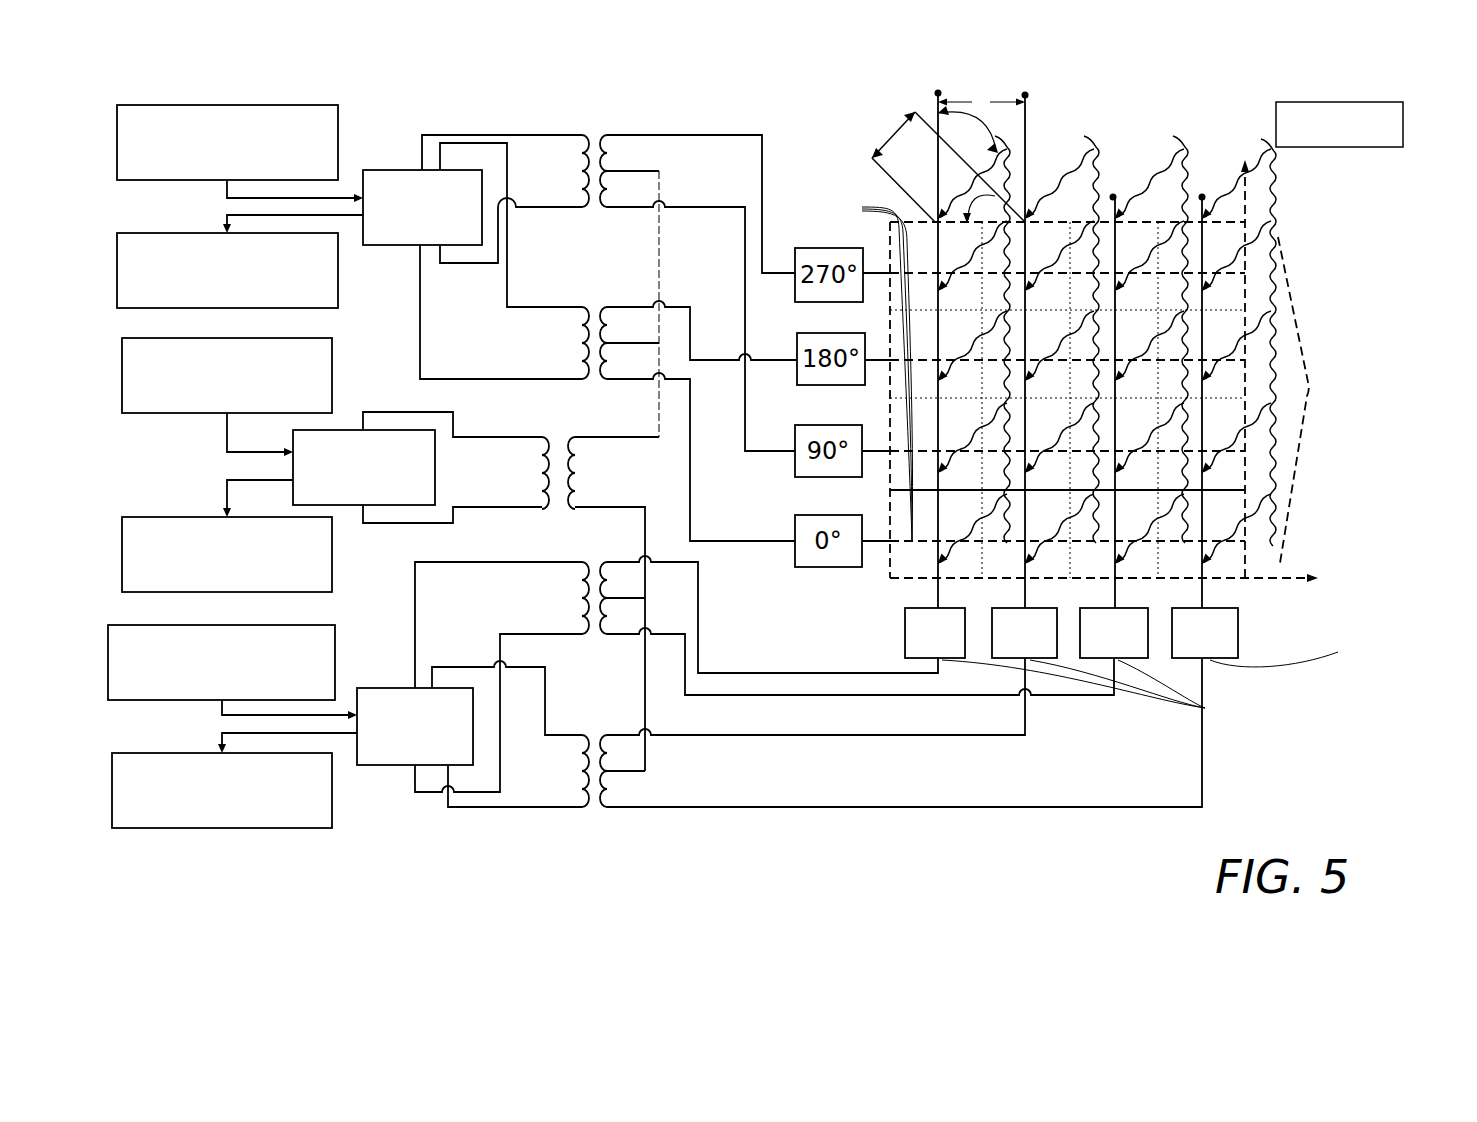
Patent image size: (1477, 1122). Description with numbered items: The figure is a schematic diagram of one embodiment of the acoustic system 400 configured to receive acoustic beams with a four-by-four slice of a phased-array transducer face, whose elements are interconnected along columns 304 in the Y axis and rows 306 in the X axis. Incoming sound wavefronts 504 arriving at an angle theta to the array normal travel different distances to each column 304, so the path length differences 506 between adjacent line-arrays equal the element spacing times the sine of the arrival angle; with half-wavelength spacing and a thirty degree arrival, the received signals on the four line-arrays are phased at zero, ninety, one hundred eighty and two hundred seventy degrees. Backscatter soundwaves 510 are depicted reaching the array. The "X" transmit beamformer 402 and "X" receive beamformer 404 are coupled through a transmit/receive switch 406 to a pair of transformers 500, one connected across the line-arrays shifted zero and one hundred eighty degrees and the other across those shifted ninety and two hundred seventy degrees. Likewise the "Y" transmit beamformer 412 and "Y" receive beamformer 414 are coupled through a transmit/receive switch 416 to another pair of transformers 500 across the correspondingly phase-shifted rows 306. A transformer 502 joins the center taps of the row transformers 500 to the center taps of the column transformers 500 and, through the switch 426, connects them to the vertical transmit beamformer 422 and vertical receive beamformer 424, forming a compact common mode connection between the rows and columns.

The columns 304 is at (862, 207).
The rows 306 is at (1205, 708).
The acoustic system 400 is at (1285, 702).
The "X" transmit beamformer 402 is at (293, 625).
The "X" receive beamformer 404 is at (277, 830).
The transmit/receive switch 406 is at (393, 767).
The "Y" transmit beamformer 412 is at (262, 105).
The "Y" receive beamformer 414 is at (338, 300).
The transmit/receive switch 416 is at (383, 168).
The vertical transmit beamformer 422 is at (332, 371).
The vertical receive beamformer 424 is at (332, 560).
The transmit/receive switch 426 is at (293, 468).
The transformers 500 is at (608, 133).
The transformer 502 is at (552, 437).
The wavefronts 504 is at (1025, 128).
The path length differences 506 is at (853, 122).
The backscatter soundwaves 510 is at (1170, 332).